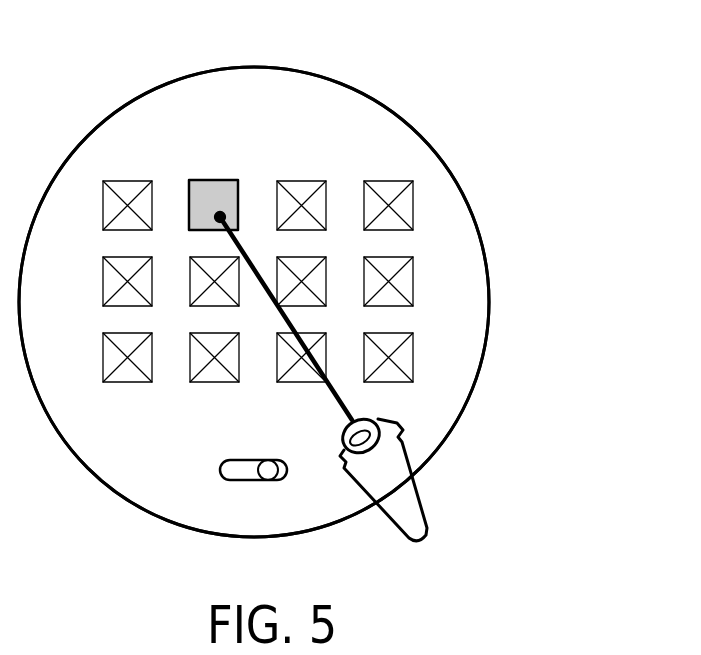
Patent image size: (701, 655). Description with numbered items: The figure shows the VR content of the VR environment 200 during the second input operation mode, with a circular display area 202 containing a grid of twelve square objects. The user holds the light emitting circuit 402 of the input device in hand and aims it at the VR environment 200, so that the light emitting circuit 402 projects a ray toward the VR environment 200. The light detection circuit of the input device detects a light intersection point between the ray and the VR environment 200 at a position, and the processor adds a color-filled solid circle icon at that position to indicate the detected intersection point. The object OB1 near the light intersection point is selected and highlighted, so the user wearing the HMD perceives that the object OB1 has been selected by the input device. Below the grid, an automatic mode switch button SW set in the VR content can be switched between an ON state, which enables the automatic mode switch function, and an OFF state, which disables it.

The VR environment 200 is at (545, 70).
The field of view / display area 202 is at (371, 99).
The object OB1 is at (225, 181).
The automatic mode switch button SW is at (250, 460).
The light emitting circuit 402 is at (410, 518).